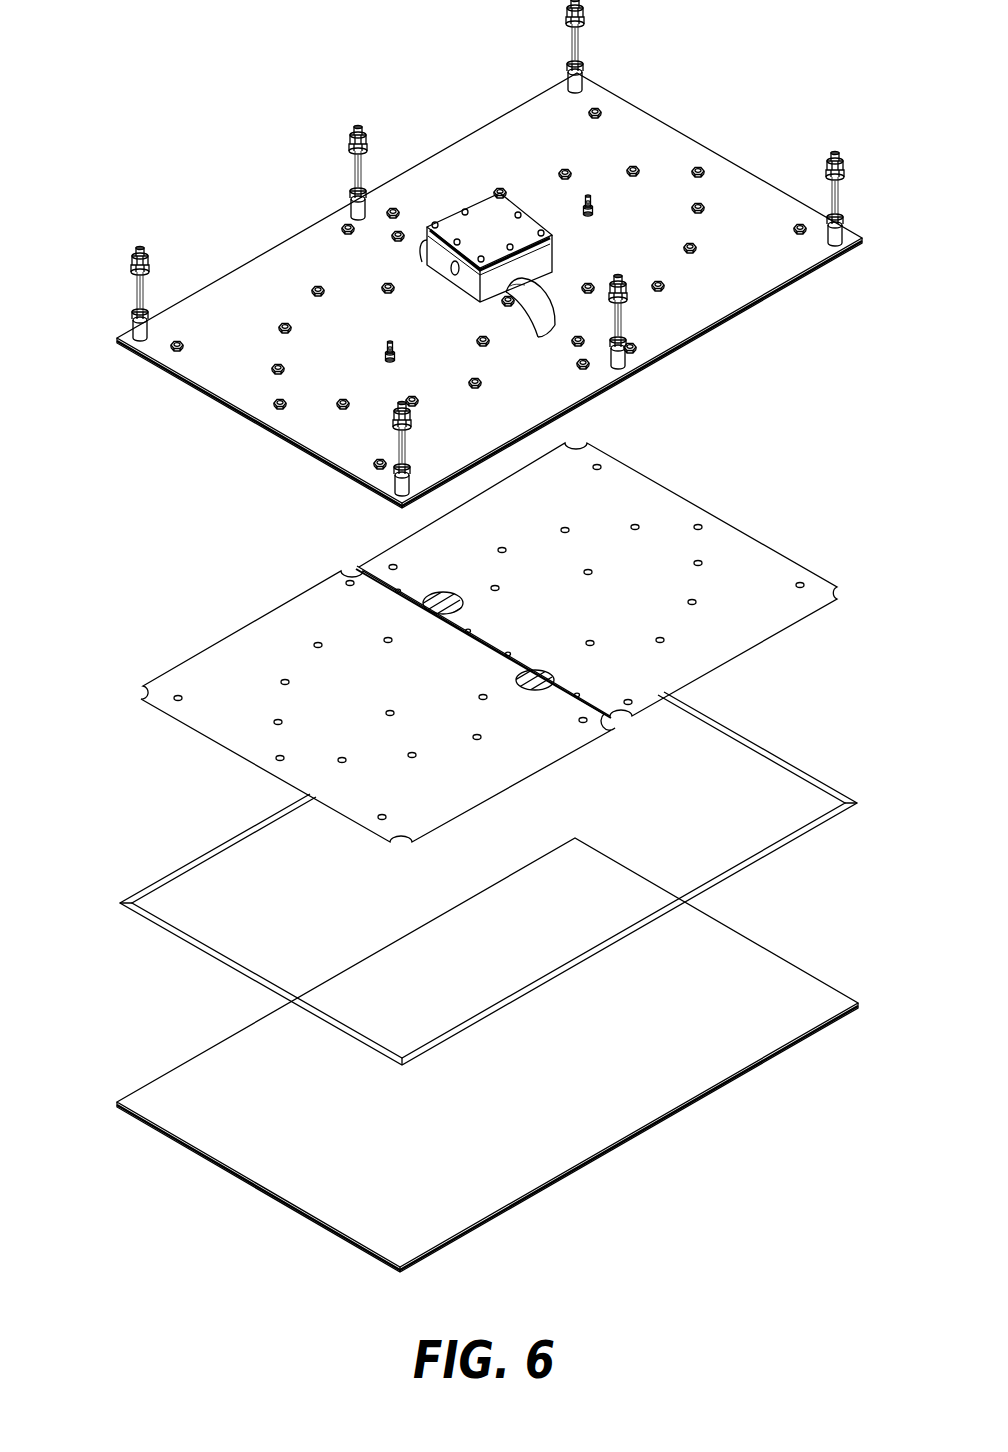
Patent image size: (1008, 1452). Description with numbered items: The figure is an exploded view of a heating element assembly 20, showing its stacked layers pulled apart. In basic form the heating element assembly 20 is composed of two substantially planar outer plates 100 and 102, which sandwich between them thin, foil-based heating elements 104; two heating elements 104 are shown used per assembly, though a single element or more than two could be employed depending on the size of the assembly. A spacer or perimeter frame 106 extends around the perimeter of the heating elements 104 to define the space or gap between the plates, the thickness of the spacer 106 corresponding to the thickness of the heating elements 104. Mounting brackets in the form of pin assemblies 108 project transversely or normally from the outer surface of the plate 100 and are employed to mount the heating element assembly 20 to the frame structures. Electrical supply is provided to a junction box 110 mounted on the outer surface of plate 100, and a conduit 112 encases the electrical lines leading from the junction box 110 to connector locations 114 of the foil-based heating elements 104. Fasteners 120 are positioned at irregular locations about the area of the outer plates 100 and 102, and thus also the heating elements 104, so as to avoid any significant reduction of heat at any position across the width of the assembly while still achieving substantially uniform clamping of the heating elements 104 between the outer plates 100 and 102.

The heating element assembly 20 is at (164, 123).
The outer plate 100 is at (262, 272).
The outer plate 102 is at (817, 983).
The heating element 104 is at (735, 534).
The spacer/perimeter frame 106 is at (800, 767).
The mounting bracket (pin assembly) 108 is at (585, 42).
The junction box 110 is at (481, 215).
The conduit 112 is at (547, 329).
The connector location 114 is at (441, 592).
The fastener 120 is at (565, 170).